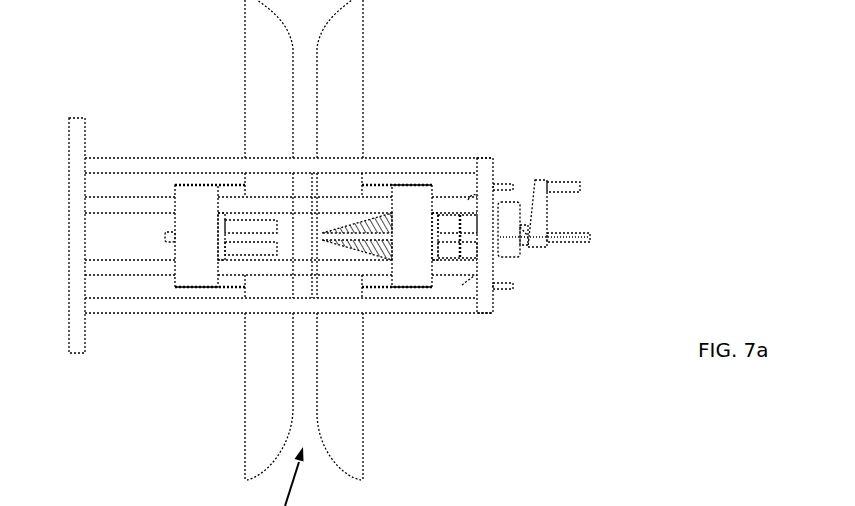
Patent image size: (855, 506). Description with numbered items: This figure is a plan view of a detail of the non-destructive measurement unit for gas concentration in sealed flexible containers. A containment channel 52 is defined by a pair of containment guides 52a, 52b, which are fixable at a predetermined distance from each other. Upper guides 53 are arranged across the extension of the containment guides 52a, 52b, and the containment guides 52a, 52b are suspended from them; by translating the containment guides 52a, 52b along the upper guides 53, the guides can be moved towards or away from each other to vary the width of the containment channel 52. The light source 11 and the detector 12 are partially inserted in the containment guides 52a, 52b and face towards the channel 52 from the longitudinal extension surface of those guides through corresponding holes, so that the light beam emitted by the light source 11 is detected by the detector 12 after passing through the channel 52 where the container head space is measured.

The light source 11 is at (447, 223).
The detector 12 is at (165, 238).
The containment channel 52 is at (200, 505).
The containment guide 52a is at (348, 45).
The containment guide 52b is at (265, 47).
The upper guides 53 is at (408, 307).